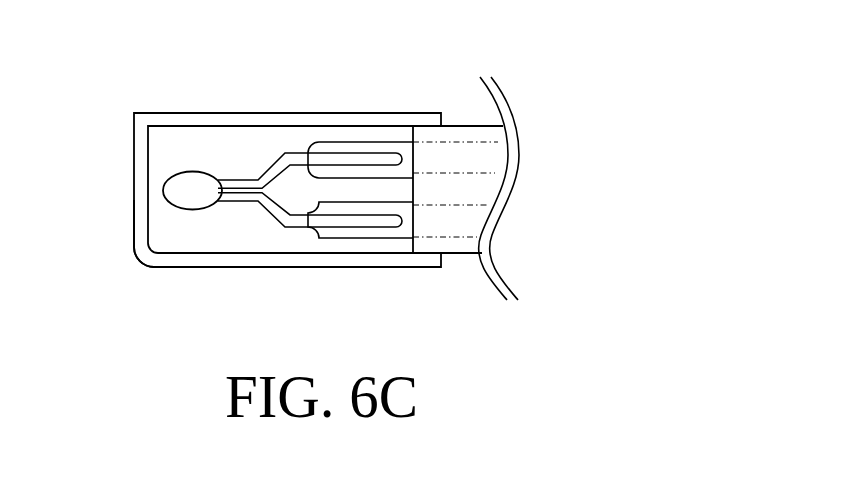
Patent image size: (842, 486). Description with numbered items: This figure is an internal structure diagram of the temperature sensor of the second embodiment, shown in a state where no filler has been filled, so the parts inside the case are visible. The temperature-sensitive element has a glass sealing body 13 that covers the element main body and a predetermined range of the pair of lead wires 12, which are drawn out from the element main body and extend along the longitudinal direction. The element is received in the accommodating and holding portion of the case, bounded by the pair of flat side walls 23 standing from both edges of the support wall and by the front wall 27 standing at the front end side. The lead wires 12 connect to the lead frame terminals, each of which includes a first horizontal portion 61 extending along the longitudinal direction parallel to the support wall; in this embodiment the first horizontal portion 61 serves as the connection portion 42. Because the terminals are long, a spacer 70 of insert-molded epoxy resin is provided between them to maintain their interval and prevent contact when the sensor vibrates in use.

The lead wires 12 is at (290, 152).
The sealing body 13 is at (192, 172).
The side walls 23 is at (163, 113).
The front wall 27 is at (133, 227).
The connection portion 42 is at (420, 186).
The first horizontal portion 61 is at (377, 142).
The spacer 70 is at (472, 126).